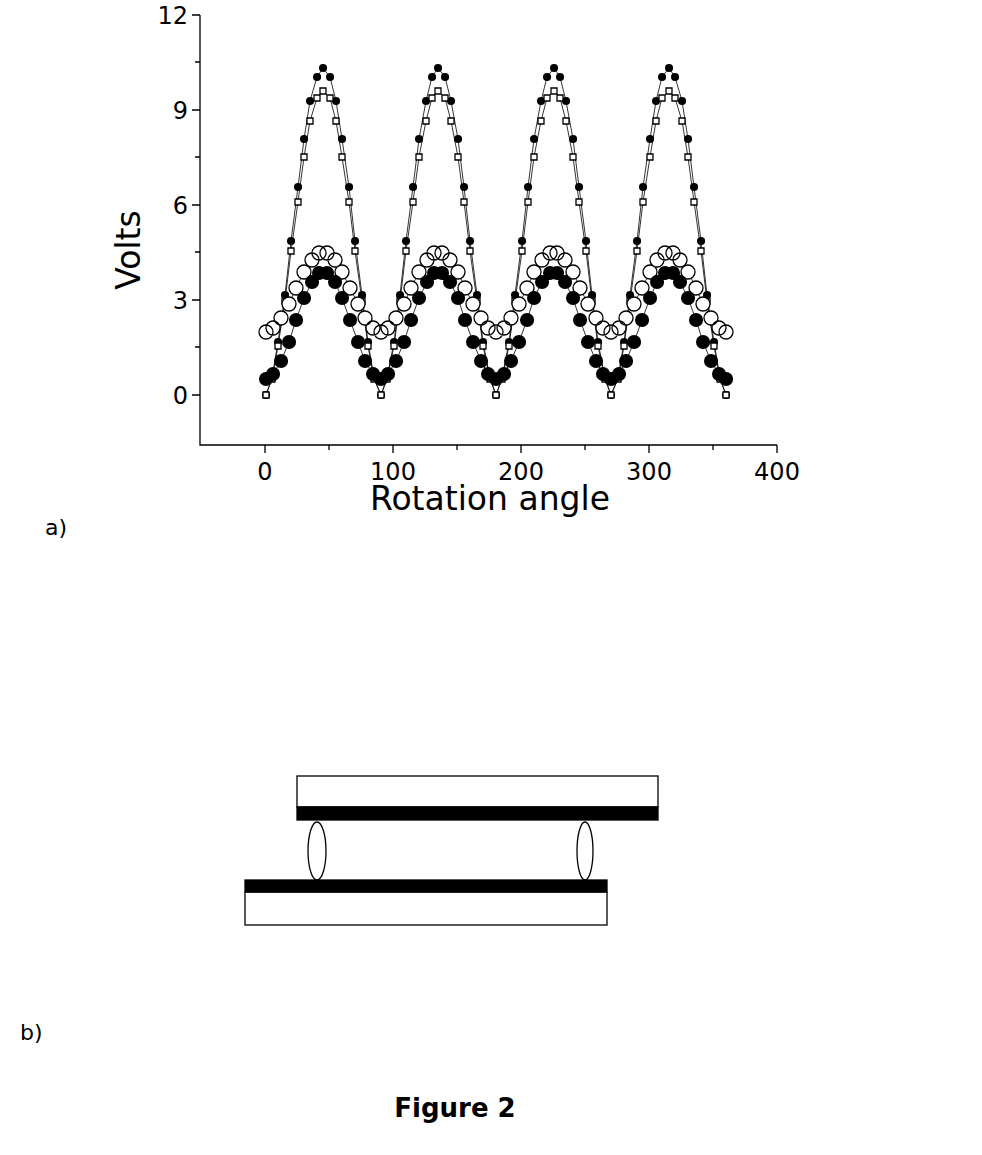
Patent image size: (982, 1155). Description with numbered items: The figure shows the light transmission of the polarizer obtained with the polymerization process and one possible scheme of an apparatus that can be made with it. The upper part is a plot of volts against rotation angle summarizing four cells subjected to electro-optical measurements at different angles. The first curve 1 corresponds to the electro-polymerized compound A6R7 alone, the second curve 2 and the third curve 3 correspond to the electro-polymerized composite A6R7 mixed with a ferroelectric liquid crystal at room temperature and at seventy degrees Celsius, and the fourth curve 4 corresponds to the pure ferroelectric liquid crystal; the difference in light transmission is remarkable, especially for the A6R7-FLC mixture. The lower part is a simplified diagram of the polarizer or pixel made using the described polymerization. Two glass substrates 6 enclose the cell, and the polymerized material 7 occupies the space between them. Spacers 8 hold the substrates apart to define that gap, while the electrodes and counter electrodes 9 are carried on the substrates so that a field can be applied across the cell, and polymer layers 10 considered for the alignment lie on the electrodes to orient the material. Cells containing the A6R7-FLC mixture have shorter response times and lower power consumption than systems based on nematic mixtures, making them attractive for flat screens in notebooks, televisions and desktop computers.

The first curve 1 is at (522, 338).
The second curve 2 is at (496, 239).
The third curve 3 is at (496, 210).
The fourth curve 4 is at (515, 298).
The glass substrates 6 is at (320, 788).
The polymerized material 7 is at (428, 847).
The spacers 8 is at (588, 822).
The electrodes and counter electrodes 9 is at (298, 810).
The polymer layers for alignment 10 is at (297, 817).